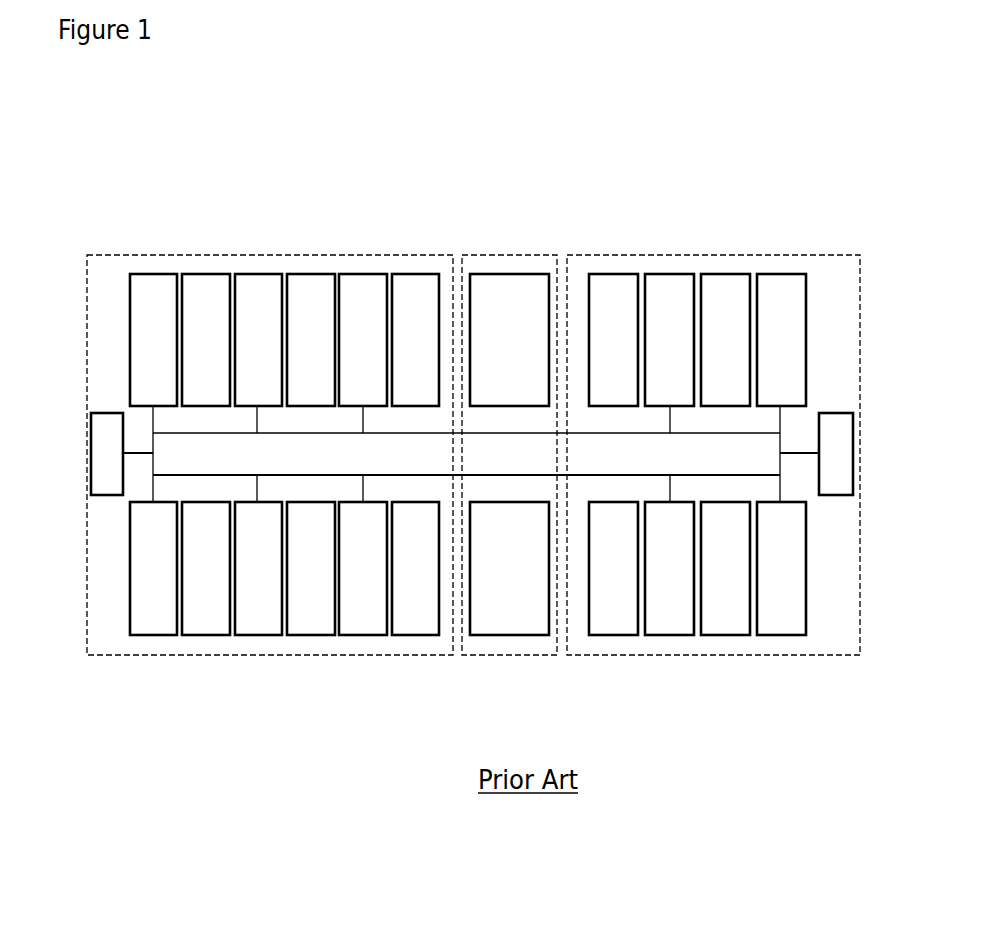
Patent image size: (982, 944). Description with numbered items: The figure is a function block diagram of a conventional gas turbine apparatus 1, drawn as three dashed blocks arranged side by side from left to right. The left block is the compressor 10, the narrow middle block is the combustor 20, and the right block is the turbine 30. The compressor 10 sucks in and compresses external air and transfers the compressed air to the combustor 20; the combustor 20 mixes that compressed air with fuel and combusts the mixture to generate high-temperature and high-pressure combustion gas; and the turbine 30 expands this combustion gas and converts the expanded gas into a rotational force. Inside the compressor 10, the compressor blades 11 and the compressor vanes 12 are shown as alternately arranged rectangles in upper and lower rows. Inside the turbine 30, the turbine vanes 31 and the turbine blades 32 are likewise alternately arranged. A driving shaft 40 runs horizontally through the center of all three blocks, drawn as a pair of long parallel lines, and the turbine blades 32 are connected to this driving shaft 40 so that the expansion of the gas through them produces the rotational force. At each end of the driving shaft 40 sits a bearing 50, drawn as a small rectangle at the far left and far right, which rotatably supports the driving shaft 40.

The gas turbine apparatus 1 is at (224, 116).
The compressor 10 is at (115, 253).
The compressor blade 11 is at (153, 273).
The compressor vane 12 is at (206, 273).
The combustor 20 is at (509, 254).
The turbine 30 is at (838, 254).
The turbine vane 31 is at (613, 273).
The turbine blade 32 is at (670, 273).
The driving shaft 40 is at (578, 476).
The bearing 50 is at (108, 496).